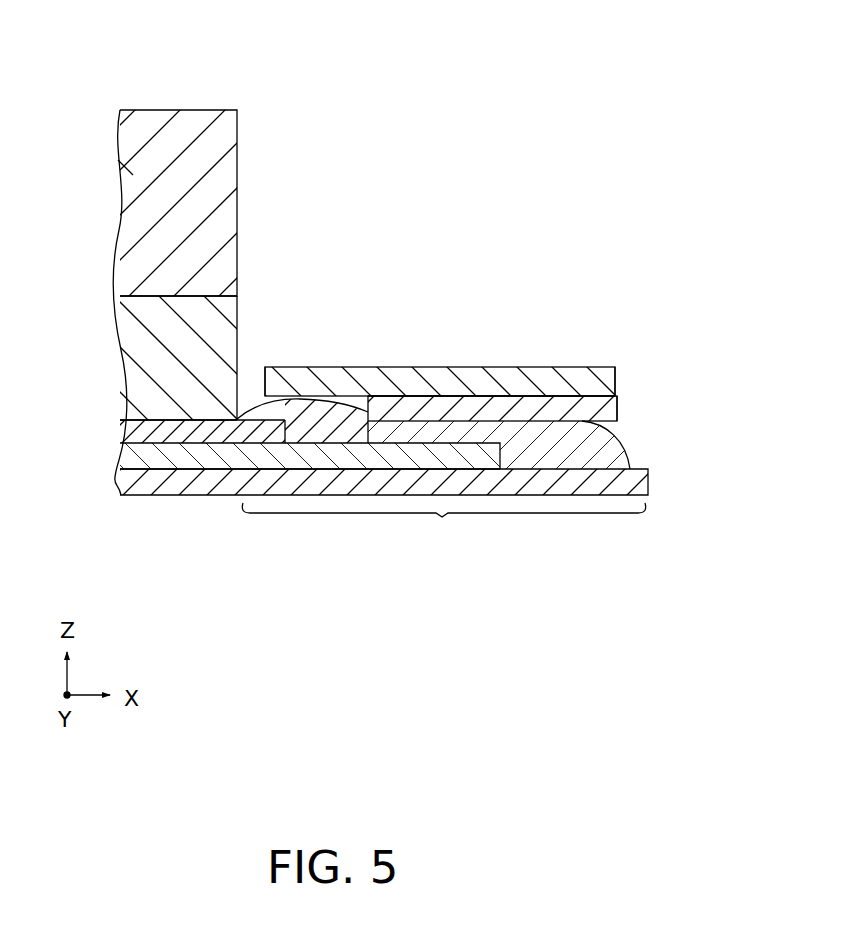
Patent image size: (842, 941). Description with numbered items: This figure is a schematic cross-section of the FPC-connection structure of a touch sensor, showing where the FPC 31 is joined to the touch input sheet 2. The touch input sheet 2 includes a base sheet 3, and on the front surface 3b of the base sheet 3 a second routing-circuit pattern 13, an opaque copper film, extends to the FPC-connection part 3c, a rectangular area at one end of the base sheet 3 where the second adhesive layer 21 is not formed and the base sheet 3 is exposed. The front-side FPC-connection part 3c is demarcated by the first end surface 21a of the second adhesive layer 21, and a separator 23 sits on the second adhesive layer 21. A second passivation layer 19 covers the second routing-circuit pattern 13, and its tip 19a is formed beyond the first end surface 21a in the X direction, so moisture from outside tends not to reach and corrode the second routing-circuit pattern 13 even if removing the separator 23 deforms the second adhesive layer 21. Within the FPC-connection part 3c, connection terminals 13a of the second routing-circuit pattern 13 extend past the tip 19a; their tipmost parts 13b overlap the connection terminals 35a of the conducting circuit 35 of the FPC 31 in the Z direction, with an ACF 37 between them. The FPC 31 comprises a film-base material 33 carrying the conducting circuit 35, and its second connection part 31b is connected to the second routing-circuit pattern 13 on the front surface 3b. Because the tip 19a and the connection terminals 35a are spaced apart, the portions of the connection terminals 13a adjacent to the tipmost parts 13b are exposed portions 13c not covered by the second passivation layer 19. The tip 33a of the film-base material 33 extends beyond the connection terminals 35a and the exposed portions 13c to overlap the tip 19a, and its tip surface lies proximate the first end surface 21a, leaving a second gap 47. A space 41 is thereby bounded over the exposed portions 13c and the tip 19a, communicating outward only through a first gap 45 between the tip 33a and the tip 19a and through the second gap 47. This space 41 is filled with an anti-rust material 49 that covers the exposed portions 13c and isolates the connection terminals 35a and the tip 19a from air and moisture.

The touch input sheet 2 is at (190, 86).
The separator 23 is at (122, 162).
The second adhesive layer 21 is at (120, 328).
The first end surface of the second adhesive layer 21a is at (240, 344).
The second passivation layer 19 is at (120, 430).
The tip of the second passivation layer 19a is at (208, 469).
The second routing-circuit pattern 13 is at (118, 456).
The connection terminals 13a is at (453, 326).
The tipmost parts 13b is at (428, 367).
The exposed portions 13c is at (345, 367).
The base sheet 3 is at (127, 498).
The front surface of the base sheet 3b is at (120, 470).
The FPC-connection part 3c is at (443, 526).
The anti-rust material 49 is at (240, 422).
The first gap 45 is at (272, 410).
The second gap 47 is at (251, 382).
The space 41 is at (302, 405).
The film-base material 33 is at (463, 366).
The tip of the film-base material 33a is at (324, 385).
The conducting circuit 35 is at (607, 412).
The connection terminals of the conducting circuit 35a is at (490, 367).
The ACF 37 is at (557, 367).
The FPC 31 is at (541, 285).
The second connection part 31b is at (563, 337).